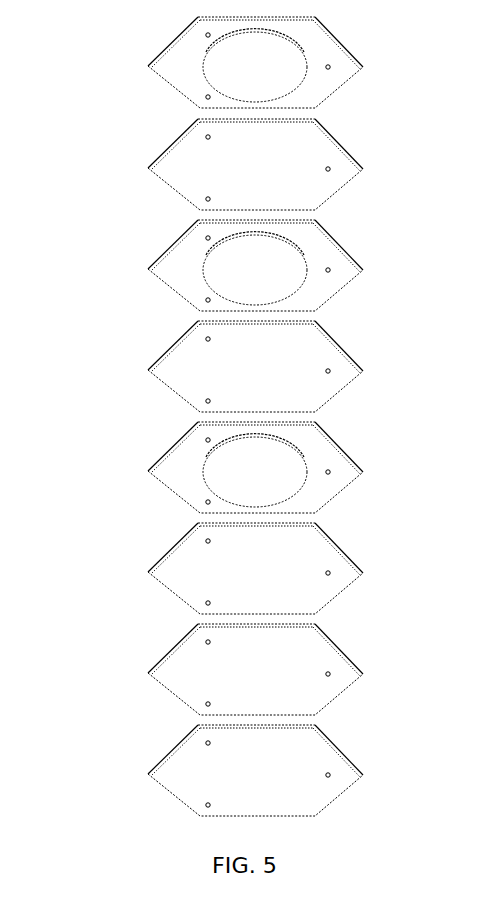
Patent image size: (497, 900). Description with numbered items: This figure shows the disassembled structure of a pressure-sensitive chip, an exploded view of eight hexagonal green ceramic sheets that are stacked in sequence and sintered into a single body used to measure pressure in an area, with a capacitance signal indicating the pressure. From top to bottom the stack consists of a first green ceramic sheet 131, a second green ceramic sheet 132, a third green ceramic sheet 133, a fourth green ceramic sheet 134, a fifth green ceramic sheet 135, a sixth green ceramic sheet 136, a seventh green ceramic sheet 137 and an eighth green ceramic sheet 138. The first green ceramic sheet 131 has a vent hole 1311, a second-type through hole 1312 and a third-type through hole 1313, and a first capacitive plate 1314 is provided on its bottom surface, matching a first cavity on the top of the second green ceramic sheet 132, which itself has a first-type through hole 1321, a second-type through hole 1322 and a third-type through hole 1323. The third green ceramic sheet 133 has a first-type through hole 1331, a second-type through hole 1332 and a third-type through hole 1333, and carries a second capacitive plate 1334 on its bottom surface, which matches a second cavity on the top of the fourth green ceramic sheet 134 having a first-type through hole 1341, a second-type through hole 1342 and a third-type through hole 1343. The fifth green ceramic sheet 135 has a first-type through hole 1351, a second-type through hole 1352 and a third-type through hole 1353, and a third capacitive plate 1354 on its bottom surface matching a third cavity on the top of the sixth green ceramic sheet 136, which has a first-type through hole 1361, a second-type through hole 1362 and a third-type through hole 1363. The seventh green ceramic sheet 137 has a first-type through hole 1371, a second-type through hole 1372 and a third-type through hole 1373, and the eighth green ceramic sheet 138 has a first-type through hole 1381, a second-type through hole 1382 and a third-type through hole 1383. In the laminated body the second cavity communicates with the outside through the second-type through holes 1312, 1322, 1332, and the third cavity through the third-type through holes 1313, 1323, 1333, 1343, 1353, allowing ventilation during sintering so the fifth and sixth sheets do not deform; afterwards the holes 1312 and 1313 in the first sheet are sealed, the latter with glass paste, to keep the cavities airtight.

The first green ceramic sheet 131 is at (148, 66).
The vent hole 1311 is at (206, 97).
The second-type through hole 1312 is at (206, 35).
The third-type through hole 1313 is at (331, 68).
The first capacitive plate 1314 is at (296, 77).
The second green ceramic sheet 132 is at (148, 168).
The first-type through hole 1321 is at (206, 199).
The second-type through hole 1322 is at (206, 137).
The third-type through hole 1323 is at (331, 170).
The third green ceramic sheet 133 is at (148, 269).
The first-type through hole 1331 is at (206, 300).
The second-type through hole 1332 is at (206, 238).
The third-type through hole 1333 is at (331, 271).
The second capacitive plate 1334 is at (296, 280).
The fourth green ceramic sheet 134 is at (148, 370).
The first-type through hole 1341 is at (206, 401).
The second-type through hole 1342 is at (206, 339).
The third-type through hole 1343 is at (331, 372).
The fifth green ceramic sheet 135 is at (148, 471).
The first-type through hole 1351 is at (206, 502).
The second-type through hole 1352 is at (206, 440).
The third-type through hole 1353 is at (331, 473).
The third capacitive plate 1354 is at (296, 482).
The sixth green ceramic sheet 136 is at (148, 572).
The first-type through hole 1361 is at (206, 603).
The second-type through hole 1362 is at (206, 541).
The third-type through hole 1363 is at (331, 574).
The seventh green ceramic sheet 137 is at (148, 673).
The first-type through hole 1371 is at (206, 704).
The second-type through hole 1372 is at (206, 642).
The third-type through hole 1373 is at (331, 675).
The eighth green ceramic sheet 138 is at (148, 774).
The first-type through hole 1381 is at (206, 805).
The second-type through hole 1382 is at (206, 743).
The third-type through hole 1383 is at (331, 776).